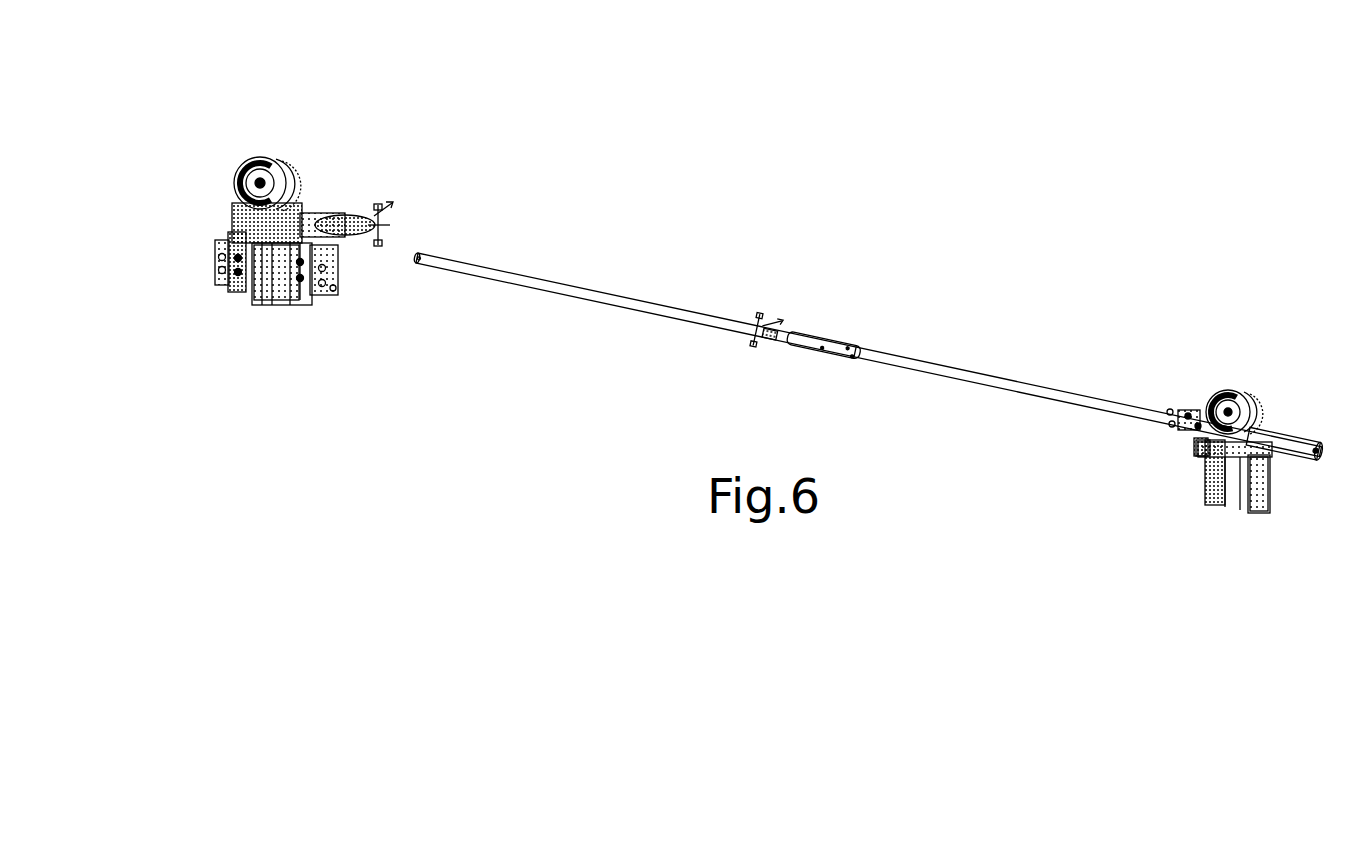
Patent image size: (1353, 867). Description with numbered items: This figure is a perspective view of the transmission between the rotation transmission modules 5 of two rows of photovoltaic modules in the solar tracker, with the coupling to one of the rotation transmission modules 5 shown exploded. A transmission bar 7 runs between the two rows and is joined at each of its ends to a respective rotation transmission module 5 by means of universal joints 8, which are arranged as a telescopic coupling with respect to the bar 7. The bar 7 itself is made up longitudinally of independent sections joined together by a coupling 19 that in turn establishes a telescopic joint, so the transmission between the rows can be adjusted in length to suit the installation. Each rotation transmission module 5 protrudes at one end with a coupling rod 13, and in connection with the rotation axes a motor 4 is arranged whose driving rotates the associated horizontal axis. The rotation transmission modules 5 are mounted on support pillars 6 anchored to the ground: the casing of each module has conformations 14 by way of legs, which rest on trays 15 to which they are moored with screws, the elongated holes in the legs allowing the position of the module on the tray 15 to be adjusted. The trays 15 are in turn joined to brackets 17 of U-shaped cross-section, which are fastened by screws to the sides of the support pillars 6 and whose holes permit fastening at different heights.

The motor 4 is at (1297, 457).
The rotation transmission module 5 is at (273, 158).
The support pillar 6 is at (273, 290).
The transmission bar 7 is at (568, 288).
The universal joint 8 is at (345, 208).
The coupling rod 13 is at (300, 222).
The conformation by way of leg 14 is at (1200, 445).
The tray 15 is at (221, 240).
The bracket 17 is at (230, 273).
The coupling 19 is at (824, 330).